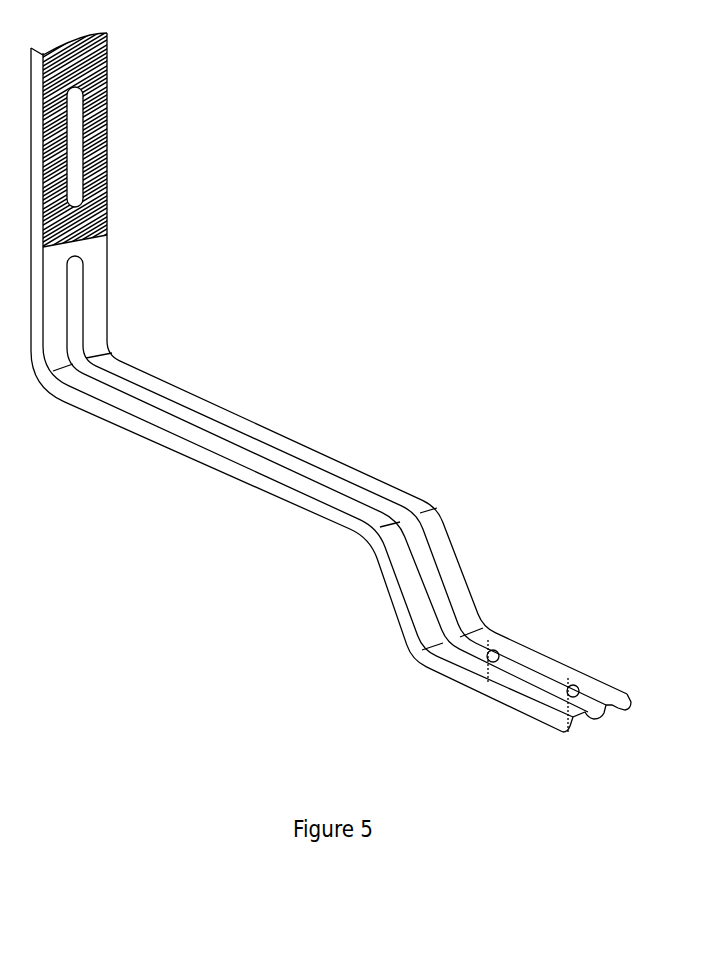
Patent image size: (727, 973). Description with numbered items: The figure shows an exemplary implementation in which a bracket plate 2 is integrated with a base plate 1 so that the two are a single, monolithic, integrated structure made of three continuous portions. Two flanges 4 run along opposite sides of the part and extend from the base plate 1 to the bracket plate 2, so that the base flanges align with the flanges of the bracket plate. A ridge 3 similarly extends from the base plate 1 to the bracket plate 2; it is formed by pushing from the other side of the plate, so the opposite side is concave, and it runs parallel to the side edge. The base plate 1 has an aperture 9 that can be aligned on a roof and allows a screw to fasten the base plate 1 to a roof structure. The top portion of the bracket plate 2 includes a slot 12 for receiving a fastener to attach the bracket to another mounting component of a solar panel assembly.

The plate 1 is at (556, 643).
The plate 2 is at (177, 355).
The ridge 3 is at (290, 462).
The flanges 4 is at (207, 457).
The aperture 9 is at (488, 653).
The slot 12 is at (108, 142).